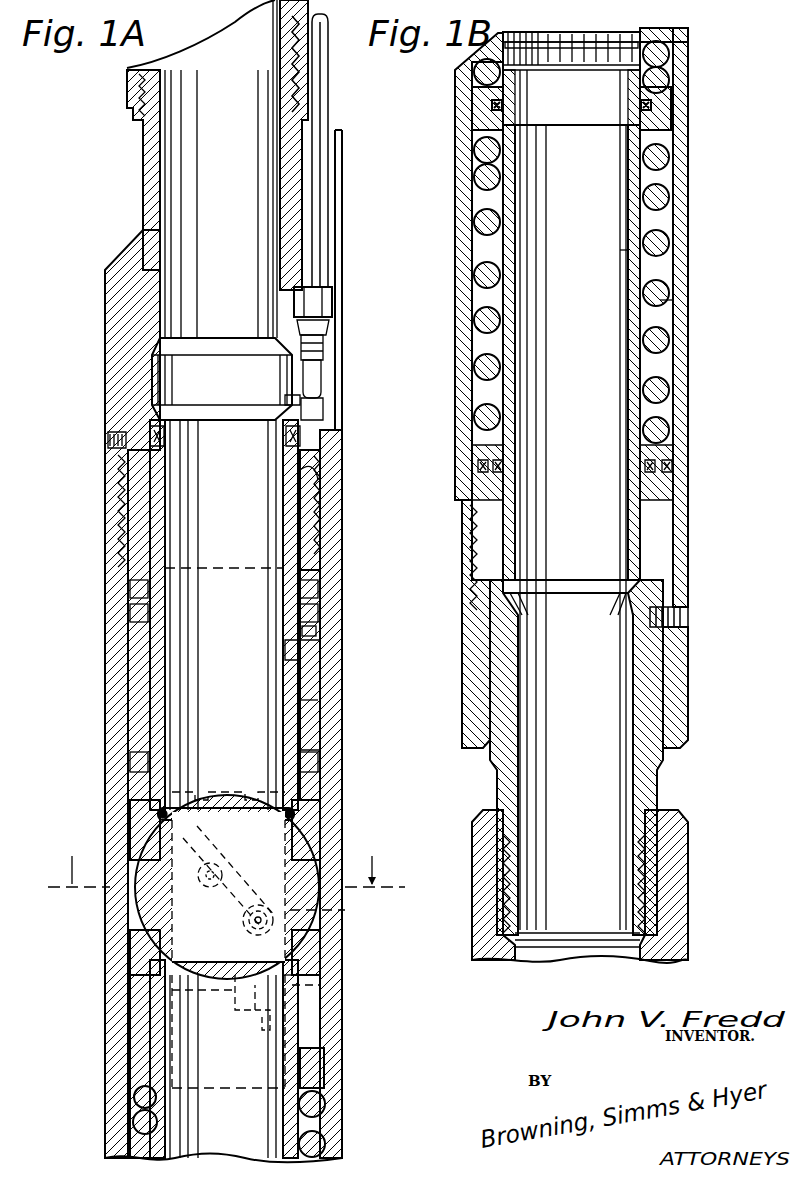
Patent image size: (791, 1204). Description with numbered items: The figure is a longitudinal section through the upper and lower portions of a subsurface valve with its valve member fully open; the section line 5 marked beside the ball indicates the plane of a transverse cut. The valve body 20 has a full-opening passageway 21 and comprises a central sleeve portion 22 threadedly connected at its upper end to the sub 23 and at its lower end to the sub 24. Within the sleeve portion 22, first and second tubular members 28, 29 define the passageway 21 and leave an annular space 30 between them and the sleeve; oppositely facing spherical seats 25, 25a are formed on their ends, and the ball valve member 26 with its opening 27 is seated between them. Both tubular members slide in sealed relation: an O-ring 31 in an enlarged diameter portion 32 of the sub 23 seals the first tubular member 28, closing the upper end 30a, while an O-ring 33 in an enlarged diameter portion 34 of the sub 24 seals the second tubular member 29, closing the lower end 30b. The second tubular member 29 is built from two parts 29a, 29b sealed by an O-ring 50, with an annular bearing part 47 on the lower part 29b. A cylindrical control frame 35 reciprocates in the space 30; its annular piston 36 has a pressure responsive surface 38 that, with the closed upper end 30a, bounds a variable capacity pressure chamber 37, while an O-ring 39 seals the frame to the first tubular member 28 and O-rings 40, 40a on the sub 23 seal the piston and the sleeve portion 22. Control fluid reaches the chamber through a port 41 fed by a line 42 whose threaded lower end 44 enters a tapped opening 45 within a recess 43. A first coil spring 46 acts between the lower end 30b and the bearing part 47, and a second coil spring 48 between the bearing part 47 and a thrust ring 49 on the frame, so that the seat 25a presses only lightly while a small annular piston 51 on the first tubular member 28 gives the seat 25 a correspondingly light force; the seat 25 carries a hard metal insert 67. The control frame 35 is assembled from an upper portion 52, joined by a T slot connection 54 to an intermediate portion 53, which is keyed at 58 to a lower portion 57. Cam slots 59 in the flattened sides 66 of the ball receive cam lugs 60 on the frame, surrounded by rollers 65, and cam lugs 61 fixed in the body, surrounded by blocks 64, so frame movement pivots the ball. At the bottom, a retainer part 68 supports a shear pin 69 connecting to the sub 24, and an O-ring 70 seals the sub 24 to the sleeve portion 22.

In FIG. 1A, the valve body 20 is at (352, 662).
In FIG. 1B, the valve body 20 is at (700, 340).
In FIG. 1A, the passageway 21 is at (283, 630).
In FIG. 1B, the passageway 21 is at (630, 310).
In FIG. 1A, the sleeve portion 22 is at (342, 725).
In FIG. 1B, the sleeve portion 22 is at (690, 70).
In FIG. 1A, the sub 23 is at (150, 172).
In FIG. 1B, the sub 24 is at (665, 770).
In FIG. 1A, the spherical seat 25 is at (298, 818).
In FIG. 1A, the spherical seat 25a is at (150, 940).
In FIG. 1A, the ball valve member 26 is at (150, 822).
In FIG. 1A, the opening 27 is at (305, 934).
In FIG. 1A, the first tubular member 28 is at (300, 525).
In FIG. 1A, the second tubular member 29 is at (140, 1005).
In FIG. 1B, the second tubular member 29 is at (672, 262).
In FIG. 1B, the part 29a is at (640, 94).
In FIG. 1B, the part 29b is at (635, 256).
In FIG. 1A, the annular space 30 is at (318, 705).
In FIG. 1B, the annular space 30 is at (670, 210).
In FIG. 1A, the upper end 30a is at (123, 470).
In FIG. 1B, the lower end 30b is at (670, 430).
In FIG. 1A, the O-ring 31 is at (288, 437).
In FIG. 1A, the enlarged diameter portion 32 is at (300, 400).
In FIG. 1B, the O-ring 33 is at (645, 464).
In FIG. 1B, the enlarged diameter portion 34 is at (663, 508).
In FIG. 1A, the control frame 35 is at (315, 692).
In FIG. 1A, the annular piston 36 is at (304, 612).
In FIG. 1A, the variable capacity pressure chamber 37 is at (302, 506).
In FIG. 1A, the pressure responsive surface 38 is at (312, 556).
In FIG. 1A, the O-ring 39 is at (318, 762).
In FIG. 1A, the O-ring 40 is at (300, 588).
In FIG. 1A, the O-ring 40a is at (316, 616).
In FIG. 1A, the port 41 is at (318, 420).
In FIG. 1A, the line 42 is at (328, 172).
In FIG. 1A, the recess 43 is at (326, 287).
In FIG. 1A, the threaded lower end 44 is at (323, 340).
In FIG. 1A, the tapped opening 45 is at (321, 368).
In FIG. 1B, the first coil spring 46 is at (678, 304).
In FIG. 1B, the annular bearing part 47 is at (668, 128).
In FIG. 1A, the second coil spring 48 is at (134, 1098).
In FIG. 1B, the second coil spring 48 is at (668, 50).
In FIG. 1A, the thrust ring 49 is at (326, 1066).
In FIG. 1B, the O-ring 50 is at (660, 104).
In FIG. 1A, the annular piston 51 is at (300, 484).
In FIG. 1A, the upper portion 52 is at (292, 655).
In FIG. 1A, the intermediate portion 53 is at (300, 985).
In FIG. 1A, the T slot connection 54 is at (247, 795).
In FIG. 1A, the lower portion 57 is at (270, 1016).
In FIG. 1A, the key 58 is at (228, 1071).
In FIG. 1A, the cam slot 59 is at (242, 878).
In FIG. 1A, the cam lug 60 is at (250, 992).
In FIG. 1A, the cam lug 61 is at (228, 864).
In FIG. 1A, the block 64 is at (238, 840).
In FIG. 1A, the roller 65 is at (348, 910).
In FIG. 1A, the flattened side 66 is at (228, 1031).
In FIG. 1A, the hard metal insert 67 is at (132, 792).
In FIG. 1B, the retainer part 68 is at (690, 665).
In FIG. 1B, the shear pin 69 is at (690, 612).
In FIG. 1B, the O-ring 70 is at (676, 462).
In FIG. 1A, the section line 5- 5 is at (226, 857).